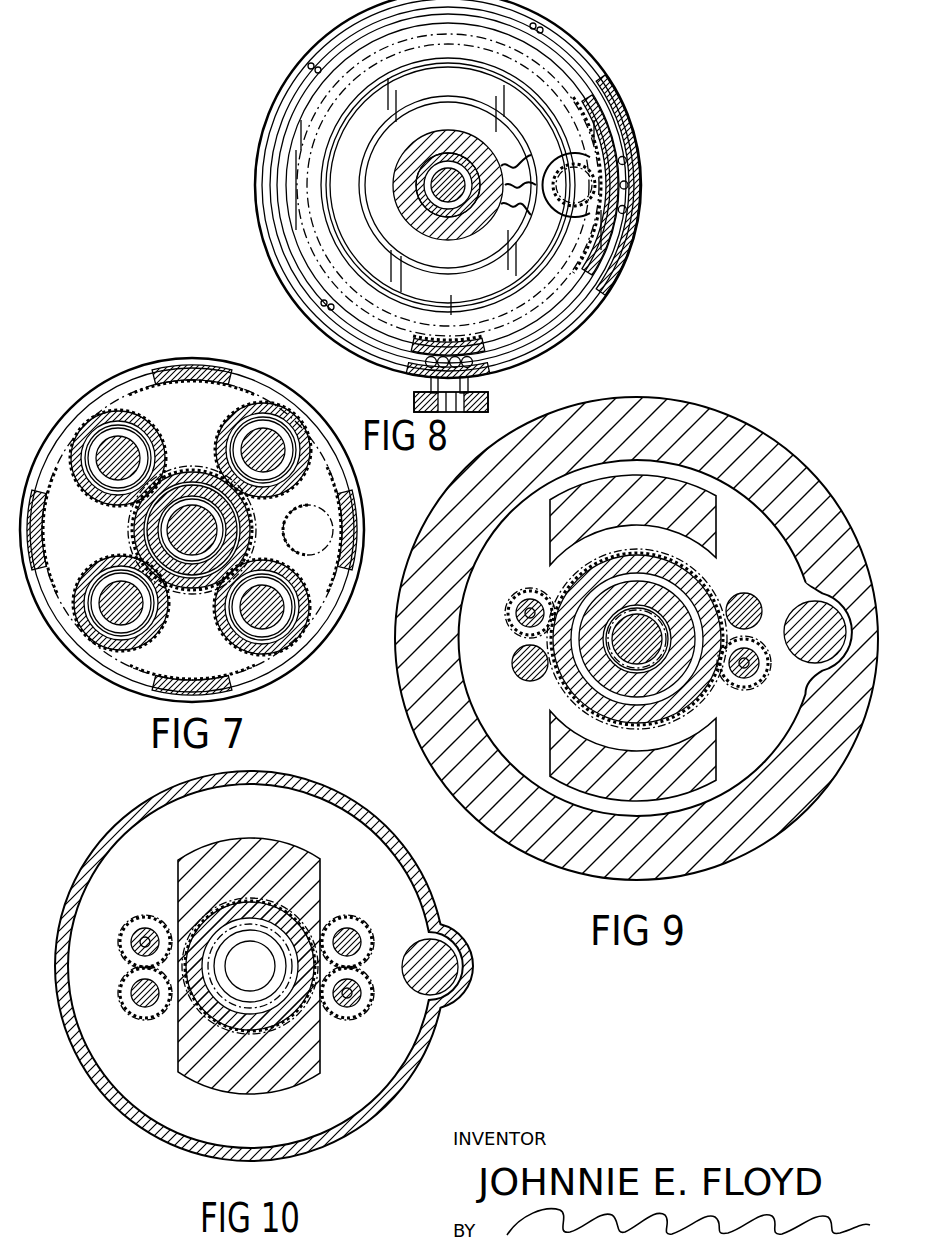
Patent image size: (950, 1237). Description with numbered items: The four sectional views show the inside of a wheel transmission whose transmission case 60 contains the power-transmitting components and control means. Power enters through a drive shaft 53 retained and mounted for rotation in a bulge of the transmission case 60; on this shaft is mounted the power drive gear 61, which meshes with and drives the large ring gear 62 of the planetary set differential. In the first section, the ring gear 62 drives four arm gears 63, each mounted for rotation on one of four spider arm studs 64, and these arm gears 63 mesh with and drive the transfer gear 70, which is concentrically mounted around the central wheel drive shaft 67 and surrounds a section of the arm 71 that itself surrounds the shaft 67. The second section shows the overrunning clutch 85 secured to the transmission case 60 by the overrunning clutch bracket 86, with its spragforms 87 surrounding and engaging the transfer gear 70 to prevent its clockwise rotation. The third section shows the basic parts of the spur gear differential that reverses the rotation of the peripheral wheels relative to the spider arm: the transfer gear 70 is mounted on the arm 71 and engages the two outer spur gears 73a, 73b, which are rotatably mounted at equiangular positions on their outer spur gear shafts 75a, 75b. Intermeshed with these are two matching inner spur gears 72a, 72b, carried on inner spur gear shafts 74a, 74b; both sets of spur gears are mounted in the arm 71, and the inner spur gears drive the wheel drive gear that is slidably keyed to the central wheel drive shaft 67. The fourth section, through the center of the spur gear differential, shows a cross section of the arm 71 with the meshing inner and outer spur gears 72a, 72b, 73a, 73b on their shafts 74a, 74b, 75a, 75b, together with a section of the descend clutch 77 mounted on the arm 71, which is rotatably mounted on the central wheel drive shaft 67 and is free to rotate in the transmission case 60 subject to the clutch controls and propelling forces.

In FIG. 9, the rear drive shaft 53 is at (815, 632).
In FIG. 10, the rear drive shaft 53 is at (455, 940).
In FIG. 8, the transmission case 60 is at (593, 49).
In FIG. 7, the transmission case 60 is at (101, 385).
In FIG. 9, the transmission case 60 is at (757, 429).
In FIG. 10, the transmission case 60 is at (345, 790).
In FIG. 8, the power drive gear 61 is at (571, 167).
In FIG. 7, the power drive gear 61 is at (308, 530).
In FIG. 8, the ring gear 62 is at (608, 142).
In FIG. 7, the ring gear 62 is at (218, 373).
In FIG. 7, the arm gear 63 is at (158, 430).
In FIG. 7, the spider arm stud 64 is at (190, 528).
In FIG. 8, the central wheel drive shaft 67 is at (448, 185).
In FIG. 7, the central wheel drive shaft 67 is at (192, 530).
In FIG. 9, the central wheel drive shaft 67 is at (637, 639).
In FIG. 10, the central wheel drive shaft 67 is at (250, 966).
In FIG. 8, the transfer gear 70 is at (474, 236).
In FIG. 7, the transfer gear 70 is at (208, 472).
In FIG. 9, the transfer gear 70 is at (637, 639).
In FIG. 8, the arm 71 is at (427, 200).
In FIG. 7, the arm 71 is at (152, 528).
In FIG. 9, the arm 71 is at (633, 638).
In FIG. 10, the arm 71 is at (249, 966).
In FIG. 10, the inner spur gear 72a is at (347, 917).
In FIG. 10, the inner spur gear 72b is at (143, 1019).
In FIG. 9, the outer spur gear 73a is at (736, 690).
In FIG. 10, the outer spur gear 73a is at (347, 1020).
In FIG. 9, the outer spur gear 73b is at (522, 600).
In FIG. 10, the outer spur gear 73b is at (143, 917).
In FIG. 9, the inner spur gear shaft 74a is at (748, 605).
In FIG. 10, the inner spur gear shaft 74a is at (352, 940).
In FIG. 9, the inner spur gear shaft 74b is at (516, 668).
In FIG. 10, the inner spur gear shaft 74b is at (138, 993).
In FIG. 9, the outer spur gear shaft 75a is at (750, 675).
In FIG. 10, the outer spur gear shaft 75a is at (352, 996).
In FIG. 9, the outer spur gear shaft 75b is at (525, 613).
In FIG. 10, the outer spur gear shaft 75b is at (140, 942).
In FIG. 10, the descend clutch 77 is at (250, 966).
In FIG. 8, the overrunning clutch 85 is at (448, 185).
In FIG. 8, the overrunning clutch bracket 86 is at (448, 185).
In FIG. 8, the spragforms 87 is at (507, 143).